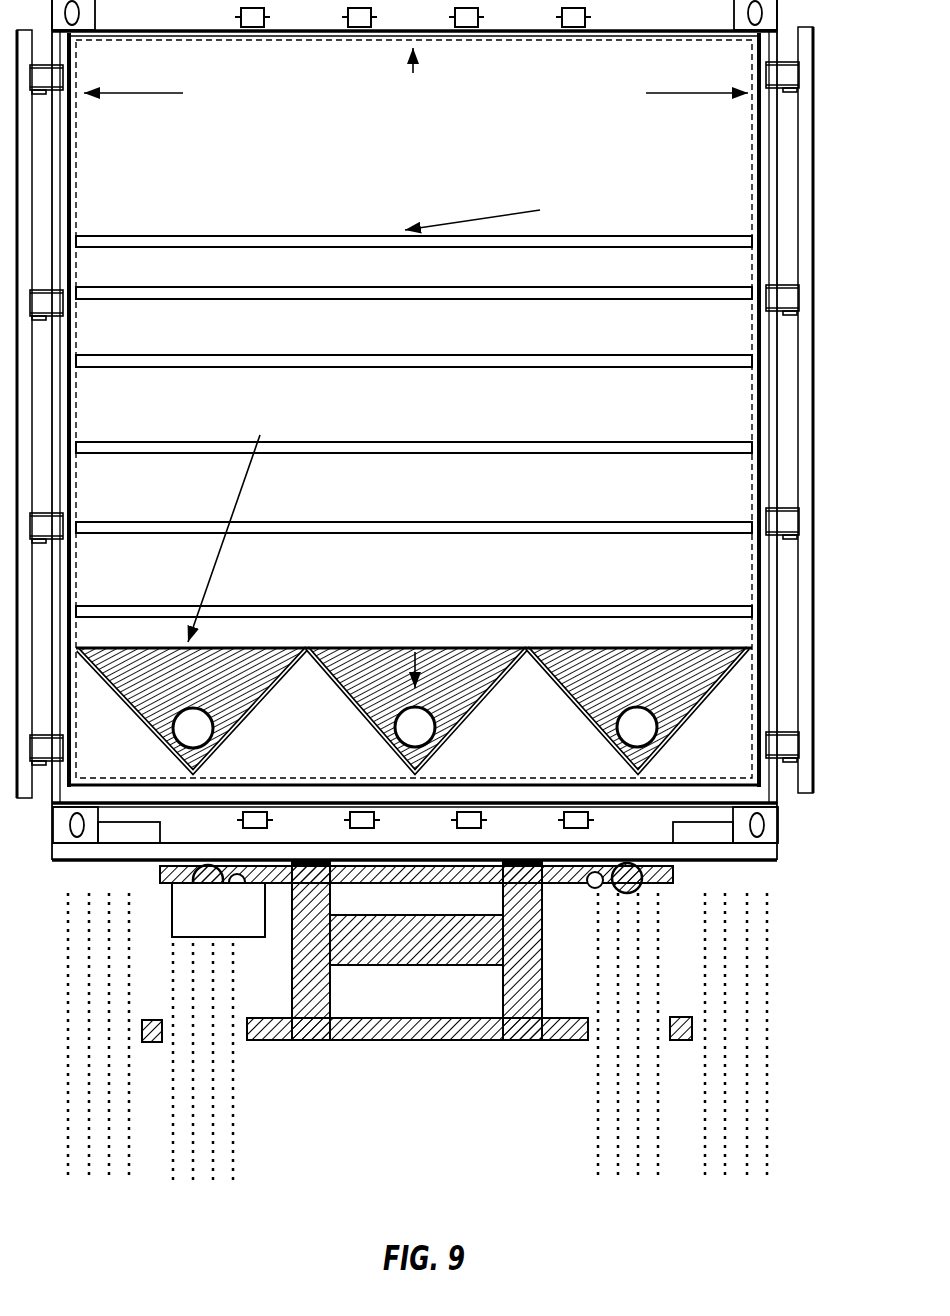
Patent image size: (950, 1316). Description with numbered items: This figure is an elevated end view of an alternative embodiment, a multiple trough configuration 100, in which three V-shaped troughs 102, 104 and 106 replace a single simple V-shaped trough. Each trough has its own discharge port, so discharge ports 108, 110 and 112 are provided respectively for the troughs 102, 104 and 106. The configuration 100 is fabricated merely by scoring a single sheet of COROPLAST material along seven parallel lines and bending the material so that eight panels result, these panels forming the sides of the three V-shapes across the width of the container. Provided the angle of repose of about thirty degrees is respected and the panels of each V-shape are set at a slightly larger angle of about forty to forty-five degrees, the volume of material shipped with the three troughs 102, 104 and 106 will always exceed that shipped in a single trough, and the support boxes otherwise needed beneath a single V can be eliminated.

The multiple trough configuration 100 is at (723, 708).
The V-shaped trough 102 is at (222, 675).
The V-shaped trough 104 is at (452, 675).
The V-shaped trough 106 is at (653, 683).
The discharge port 108 is at (193, 728).
The discharge port 110 is at (415, 727).
The discharge port 112 is at (637, 728).